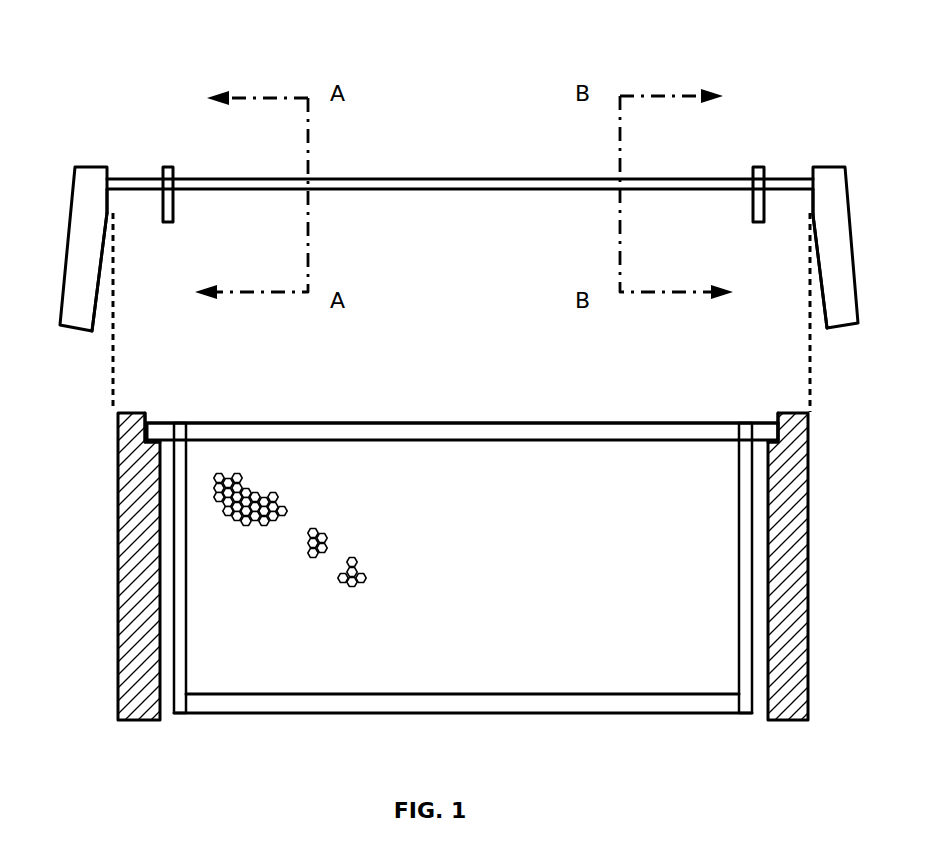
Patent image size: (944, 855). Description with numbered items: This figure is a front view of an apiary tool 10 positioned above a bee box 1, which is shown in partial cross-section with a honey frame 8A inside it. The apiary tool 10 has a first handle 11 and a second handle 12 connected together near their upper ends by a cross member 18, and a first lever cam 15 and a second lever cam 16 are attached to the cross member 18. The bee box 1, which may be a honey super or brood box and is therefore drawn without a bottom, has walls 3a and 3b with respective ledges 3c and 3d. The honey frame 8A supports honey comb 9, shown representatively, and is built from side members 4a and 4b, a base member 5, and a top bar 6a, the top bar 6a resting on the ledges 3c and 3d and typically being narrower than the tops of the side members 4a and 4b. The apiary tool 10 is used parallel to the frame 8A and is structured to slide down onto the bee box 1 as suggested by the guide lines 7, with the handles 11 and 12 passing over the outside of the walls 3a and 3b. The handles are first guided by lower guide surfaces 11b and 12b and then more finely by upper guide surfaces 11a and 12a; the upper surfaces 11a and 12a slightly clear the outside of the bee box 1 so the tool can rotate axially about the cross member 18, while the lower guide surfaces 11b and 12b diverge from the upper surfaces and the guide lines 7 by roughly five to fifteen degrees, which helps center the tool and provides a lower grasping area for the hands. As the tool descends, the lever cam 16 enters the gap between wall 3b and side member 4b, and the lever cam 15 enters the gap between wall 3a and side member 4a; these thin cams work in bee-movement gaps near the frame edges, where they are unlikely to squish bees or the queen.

The bee box 1 is at (461, 569).
The wall 3a is at (118, 527).
The wall 3b is at (808, 533).
The ledge 3c is at (148, 418).
The ledge 3d is at (777, 418).
The side member 4a is at (178, 714).
The side member 4b is at (748, 714).
The base member 5 is at (283, 714).
The top bar 6a is at (270, 421).
The guide lines 7 is at (100, 362).
The honey frame 8A is at (405, 410).
The honey comb 9 is at (206, 502).
The apiary tool 10 is at (460, 173).
The first handle 11 is at (92, 166).
The upper guide surface 11a is at (109, 198).
The lower guide surface 11b is at (97, 298).
The second handle 12 is at (843, 165).
The upper guide surface 12a is at (813, 197).
The lower guide surface 12b is at (822, 293).
The first lever cam 15 is at (162, 168).
The second lever cam 16 is at (766, 170).
The cross member 18 is at (460, 177).